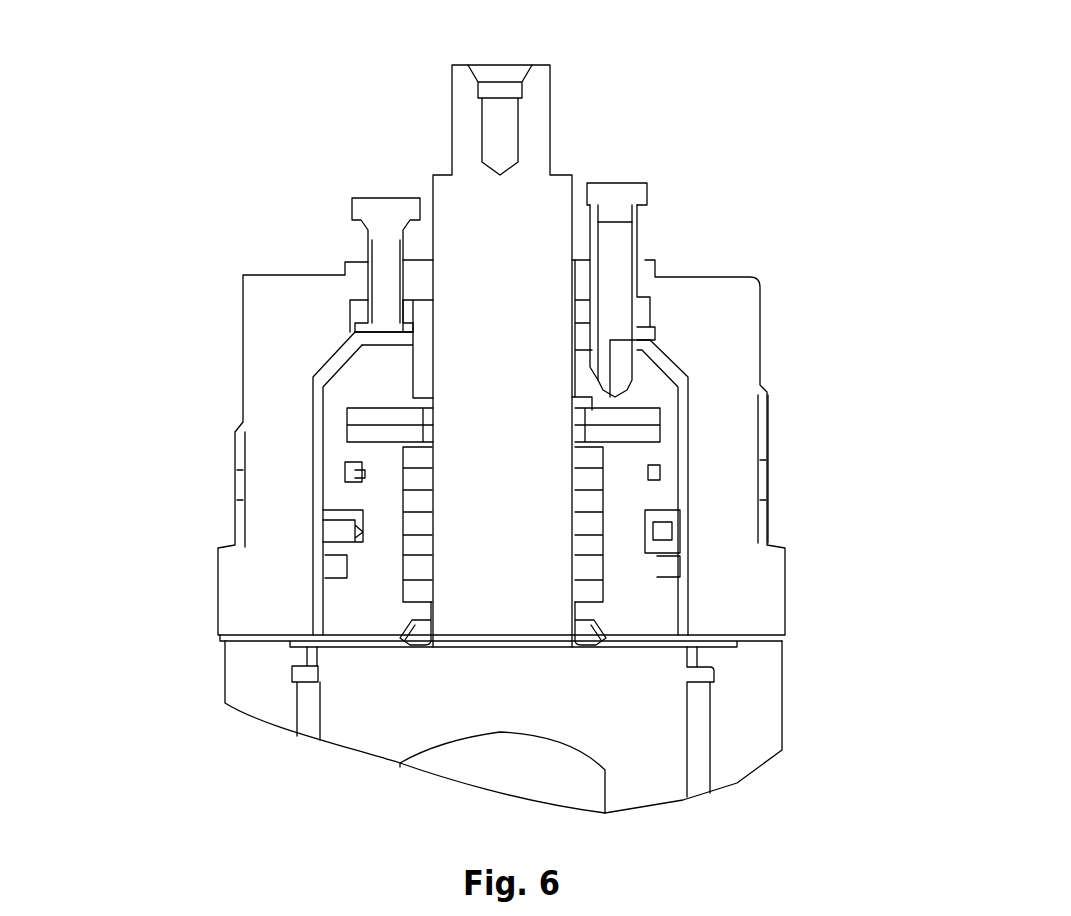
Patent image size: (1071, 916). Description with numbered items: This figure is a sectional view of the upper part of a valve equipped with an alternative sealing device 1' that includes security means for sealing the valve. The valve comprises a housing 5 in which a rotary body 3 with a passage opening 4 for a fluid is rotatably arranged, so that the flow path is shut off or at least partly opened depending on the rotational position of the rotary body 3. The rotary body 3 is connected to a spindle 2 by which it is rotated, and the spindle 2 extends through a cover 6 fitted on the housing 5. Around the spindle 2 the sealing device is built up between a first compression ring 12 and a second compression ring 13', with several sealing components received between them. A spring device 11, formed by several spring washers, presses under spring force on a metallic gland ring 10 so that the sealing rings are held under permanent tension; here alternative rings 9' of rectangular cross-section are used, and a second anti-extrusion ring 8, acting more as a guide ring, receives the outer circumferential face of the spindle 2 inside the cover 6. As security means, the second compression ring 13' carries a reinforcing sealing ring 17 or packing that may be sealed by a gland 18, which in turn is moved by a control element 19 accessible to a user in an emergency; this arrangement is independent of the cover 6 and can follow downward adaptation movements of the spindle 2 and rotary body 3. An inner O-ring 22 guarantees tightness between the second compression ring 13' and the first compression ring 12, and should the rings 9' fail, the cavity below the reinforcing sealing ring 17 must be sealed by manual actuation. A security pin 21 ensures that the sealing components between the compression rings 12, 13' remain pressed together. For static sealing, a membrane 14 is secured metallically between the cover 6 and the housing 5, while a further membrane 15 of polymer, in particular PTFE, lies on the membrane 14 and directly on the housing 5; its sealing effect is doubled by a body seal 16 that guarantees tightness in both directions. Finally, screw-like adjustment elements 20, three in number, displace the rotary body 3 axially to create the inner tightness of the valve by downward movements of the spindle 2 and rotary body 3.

The spindle 2 is at (483, 204).
The cover 6 is at (330, 277).
The adjustment element 20 is at (380, 263).
The control element 19 is at (626, 243).
The gland 18 is at (647, 307).
The reinforcing sealing ring 17 is at (578, 374).
The second compression ring 13' is at (239, 314).
The spring device 11 is at (368, 417).
The gland ring 10 is at (410, 463).
The second anti-extrusion ring 8 is at (410, 475).
The rings of rectangular cross-section 9' is at (230, 527).
The first compression ring 12 is at (332, 592).
The body seal 16 is at (412, 640).
The membrane 14 is at (413, 643).
The further membrane 15 is at (360, 641).
The housing 5 is at (270, 702).
The rotary body 3 is at (358, 740).
The passage opening 4 is at (500, 770).
The alternative sealing device 1' is at (598, 456).
The O-ring 22 is at (658, 470).
The security pin 21 is at (672, 530).